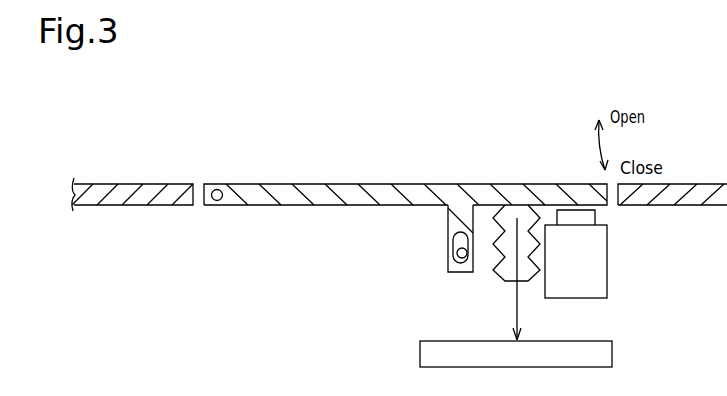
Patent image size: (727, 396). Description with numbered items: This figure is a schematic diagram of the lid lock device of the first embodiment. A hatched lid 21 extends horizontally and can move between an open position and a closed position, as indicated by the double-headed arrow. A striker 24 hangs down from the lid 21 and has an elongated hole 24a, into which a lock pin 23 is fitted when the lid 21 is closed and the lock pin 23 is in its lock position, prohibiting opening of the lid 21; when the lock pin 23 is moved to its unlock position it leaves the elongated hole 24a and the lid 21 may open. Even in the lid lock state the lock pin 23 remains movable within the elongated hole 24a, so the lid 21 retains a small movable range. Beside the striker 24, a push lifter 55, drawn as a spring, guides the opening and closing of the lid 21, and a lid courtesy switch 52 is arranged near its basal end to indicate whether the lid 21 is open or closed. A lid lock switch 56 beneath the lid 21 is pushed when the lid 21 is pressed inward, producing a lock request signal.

The lid 21 is at (447, 192).
The lock pin 23 is at (457, 252).
The striker 24 is at (471, 272).
The elongated hole 24a is at (468, 265).
The push lifter 55 is at (522, 283).
The lid lock switch 56 is at (608, 262).
The lid courtesy switch 52 is at (613, 354).